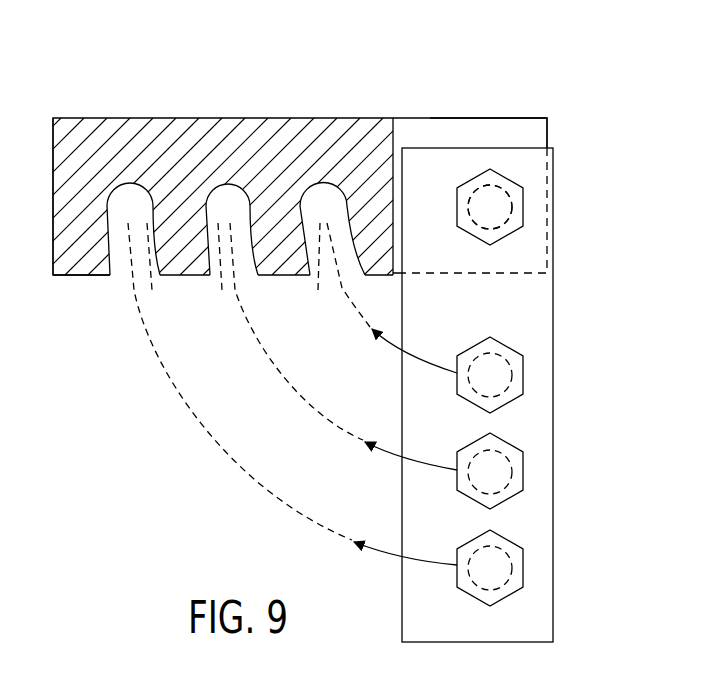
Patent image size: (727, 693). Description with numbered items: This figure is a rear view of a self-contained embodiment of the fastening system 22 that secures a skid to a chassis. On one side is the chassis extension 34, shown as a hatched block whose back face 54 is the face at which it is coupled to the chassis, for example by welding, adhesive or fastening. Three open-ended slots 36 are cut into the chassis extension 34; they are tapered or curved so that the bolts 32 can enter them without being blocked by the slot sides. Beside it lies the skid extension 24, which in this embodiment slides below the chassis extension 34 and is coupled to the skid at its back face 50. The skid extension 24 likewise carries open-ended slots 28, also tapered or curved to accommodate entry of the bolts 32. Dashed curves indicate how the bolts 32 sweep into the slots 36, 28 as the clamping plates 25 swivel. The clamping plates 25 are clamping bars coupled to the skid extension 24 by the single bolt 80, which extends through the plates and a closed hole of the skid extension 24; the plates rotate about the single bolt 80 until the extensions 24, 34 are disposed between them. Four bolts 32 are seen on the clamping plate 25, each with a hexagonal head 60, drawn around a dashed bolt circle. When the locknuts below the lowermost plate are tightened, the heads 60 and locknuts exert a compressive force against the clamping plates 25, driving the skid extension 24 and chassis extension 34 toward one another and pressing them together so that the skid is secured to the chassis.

The fastening system 22 is at (558, 66).
The skid extension 24 is at (425, 137).
The clamping plates 25 is at (535, 325).
The open-ended slots 28 is at (221, 282).
The bolts 32 is at (478, 207).
The chassis extension 34 is at (300, 127).
The open-ended slots 36 is at (151, 217).
The back face 50 is at (503, 118).
The back face 54 is at (190, 118).
The heads 60 is at (523, 205).
The single bolt 80 is at (489, 200).